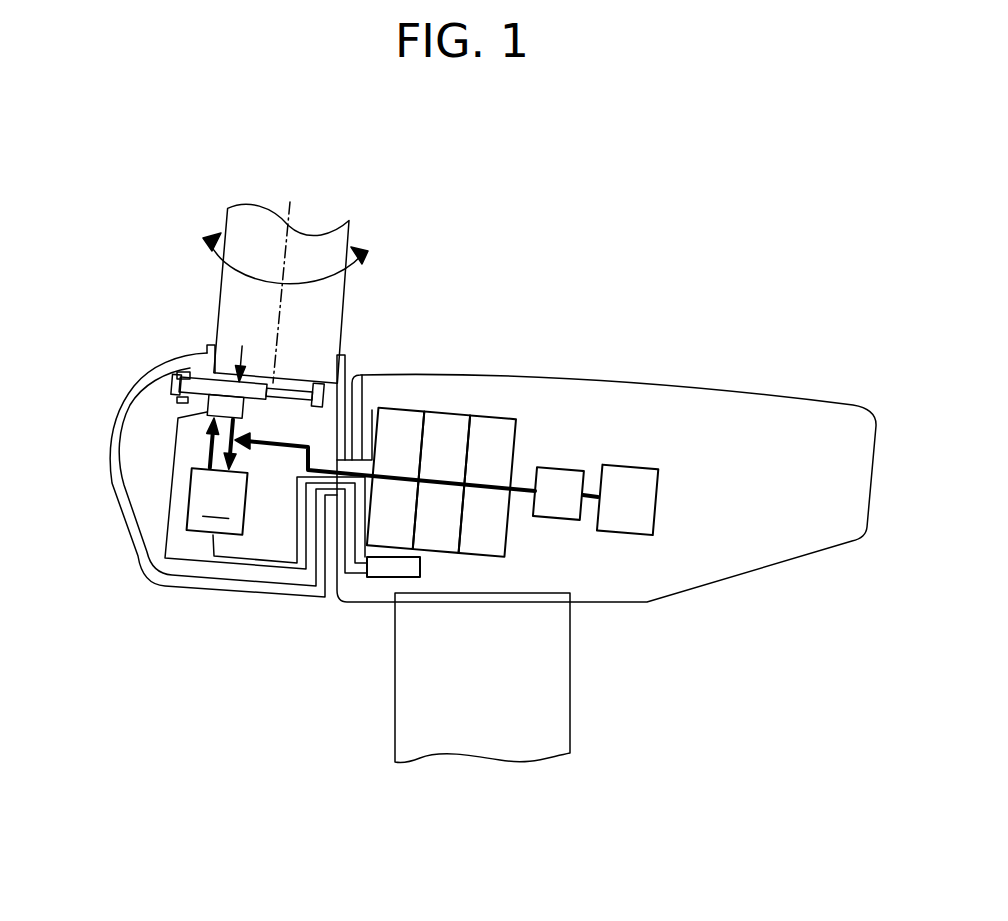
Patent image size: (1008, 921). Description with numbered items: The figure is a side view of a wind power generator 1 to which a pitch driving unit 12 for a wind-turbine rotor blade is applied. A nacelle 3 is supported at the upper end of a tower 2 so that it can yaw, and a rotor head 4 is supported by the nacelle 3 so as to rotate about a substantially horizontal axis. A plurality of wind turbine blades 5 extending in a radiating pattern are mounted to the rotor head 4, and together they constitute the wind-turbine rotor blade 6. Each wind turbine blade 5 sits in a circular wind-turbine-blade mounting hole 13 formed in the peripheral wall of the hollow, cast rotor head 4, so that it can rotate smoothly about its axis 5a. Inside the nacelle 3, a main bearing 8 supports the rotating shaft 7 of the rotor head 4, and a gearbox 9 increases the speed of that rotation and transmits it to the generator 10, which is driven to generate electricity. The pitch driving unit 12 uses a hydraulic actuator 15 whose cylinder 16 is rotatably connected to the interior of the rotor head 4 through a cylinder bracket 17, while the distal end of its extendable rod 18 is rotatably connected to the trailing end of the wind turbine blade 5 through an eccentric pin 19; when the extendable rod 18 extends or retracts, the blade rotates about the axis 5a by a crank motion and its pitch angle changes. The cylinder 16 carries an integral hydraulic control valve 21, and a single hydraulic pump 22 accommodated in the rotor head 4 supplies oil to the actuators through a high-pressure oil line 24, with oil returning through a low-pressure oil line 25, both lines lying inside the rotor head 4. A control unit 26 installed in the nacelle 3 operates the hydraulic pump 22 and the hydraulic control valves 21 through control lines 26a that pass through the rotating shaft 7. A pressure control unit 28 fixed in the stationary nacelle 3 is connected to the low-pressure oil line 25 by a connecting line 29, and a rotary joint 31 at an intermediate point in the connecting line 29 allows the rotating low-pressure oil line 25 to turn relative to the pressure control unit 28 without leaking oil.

The wind power generator 1 is at (578, 254).
The tower 2 is at (572, 683).
The nacelle 3 is at (745, 392).
The rotor head 4 is at (112, 494).
The wind turbine blade 5 is at (228, 221).
The axis 5a is at (292, 208).
The wind-turbine rotor blade 6 is at (116, 584).
The rotating shaft 7 is at (361, 458).
The main bearing 8 is at (405, 410).
The gearbox 9 is at (446, 415).
The generator 10 is at (495, 420).
The pitch driving unit 12 is at (204, 652).
The wind-turbine-blade mounting hole 13 is at (228, 346).
The hydraulic actuator 15 is at (241, 358).
The cylinder 16 is at (178, 383).
The cylinder bracket 17 is at (176, 391).
The extendable rod 18 is at (303, 388).
The eccentric pin 19 is at (322, 384).
The hydraulic control valve 21 is at (244, 412).
The hydraulic pump 22 is at (217, 501).
The high-pressure oil line 24 is at (206, 449).
The low-pressure oil line 25 is at (238, 450).
The control unit 26 is at (383, 578).
The control line 26a is at (243, 570).
The pressure control unit 28 is at (630, 470).
The connecting line 29 is at (522, 488).
The rotary joint 31 is at (571, 468).